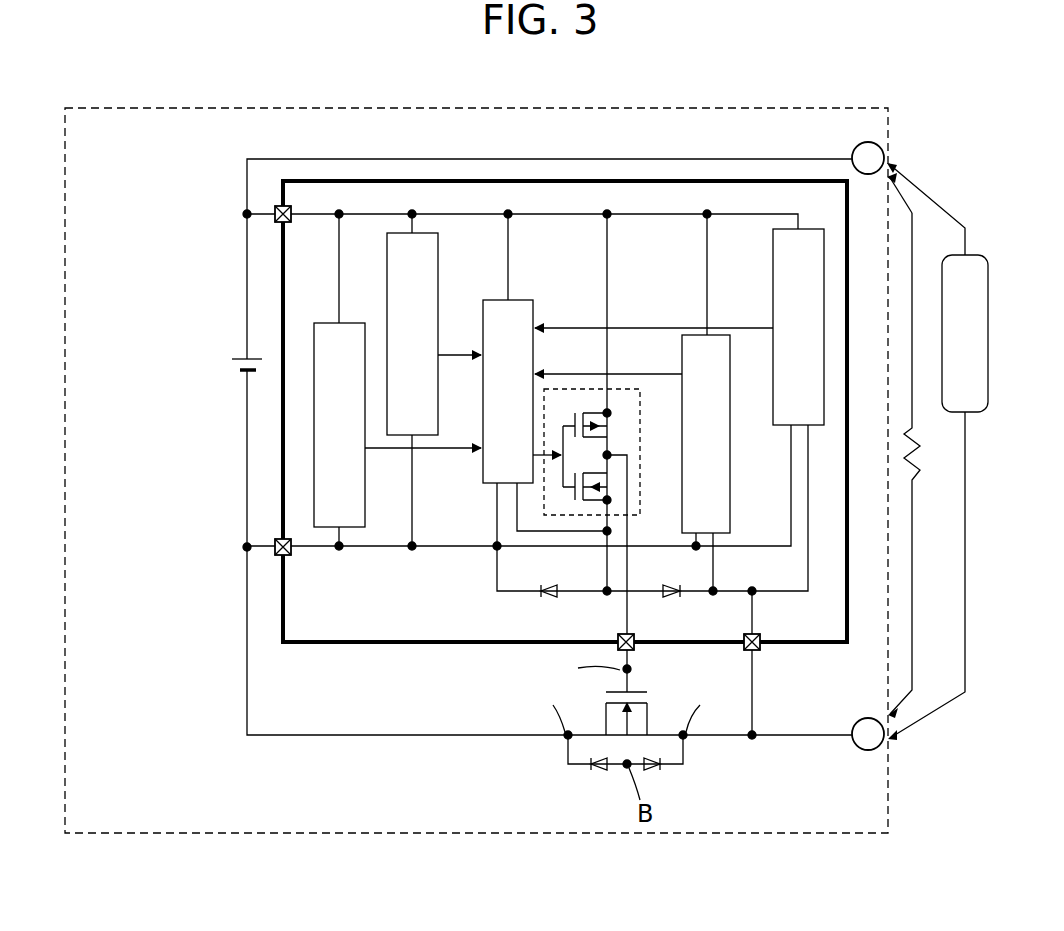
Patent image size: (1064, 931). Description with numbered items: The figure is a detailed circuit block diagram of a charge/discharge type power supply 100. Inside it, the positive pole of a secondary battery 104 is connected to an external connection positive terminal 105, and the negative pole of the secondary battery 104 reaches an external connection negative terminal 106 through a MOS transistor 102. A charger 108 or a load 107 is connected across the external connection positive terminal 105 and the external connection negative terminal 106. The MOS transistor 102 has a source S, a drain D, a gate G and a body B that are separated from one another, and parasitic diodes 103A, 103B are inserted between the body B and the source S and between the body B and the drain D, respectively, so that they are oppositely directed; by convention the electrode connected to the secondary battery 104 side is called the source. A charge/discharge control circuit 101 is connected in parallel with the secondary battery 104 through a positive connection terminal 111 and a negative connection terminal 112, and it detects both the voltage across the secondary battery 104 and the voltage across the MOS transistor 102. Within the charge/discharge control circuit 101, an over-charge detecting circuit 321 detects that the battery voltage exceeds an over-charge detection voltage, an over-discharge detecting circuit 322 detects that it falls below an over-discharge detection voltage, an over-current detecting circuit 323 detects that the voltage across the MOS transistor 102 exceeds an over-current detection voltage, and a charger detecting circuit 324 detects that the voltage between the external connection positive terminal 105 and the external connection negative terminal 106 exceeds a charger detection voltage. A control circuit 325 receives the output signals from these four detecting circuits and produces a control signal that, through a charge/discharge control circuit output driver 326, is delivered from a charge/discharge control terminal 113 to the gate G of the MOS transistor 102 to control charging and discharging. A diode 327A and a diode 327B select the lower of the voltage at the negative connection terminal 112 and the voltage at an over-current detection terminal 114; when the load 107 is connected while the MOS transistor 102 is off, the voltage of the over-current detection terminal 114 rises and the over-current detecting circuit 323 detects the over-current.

The charge/discharge type power supply 100 is at (232, 108).
The charge/discharge control circuit 101 is at (344, 181).
The MOS transistor 102 is at (650, 715).
The parasitic diode 103A is at (600, 772).
The parasitic diode 103B is at (658, 772).
The secondary battery 104 is at (230, 372).
The external connection positive terminal 105 is at (856, 146).
The external connection negative terminal 106 is at (857, 748).
The load 107 is at (925, 456).
The charger 108 is at (988, 330).
The positive connection terminal 111 is at (273, 210).
The negative connection terminal 112 is at (293, 557).
The charge/discharge control terminal 113 is at (636, 636).
The over-current detection terminal 114 is at (762, 636).
The over-charge detecting circuit 321 is at (367, 467).
The over-discharge detecting circuit 322 is at (438, 238).
The over-current detecting circuit 323 is at (730, 442).
The charger detecting circuit 324 is at (773, 243).
The control circuit 325 is at (482, 465).
The charge/discharge control circuit output driver 326 is at (582, 389).
The diode 327A is at (550, 585).
The diode 327B is at (665, 585).